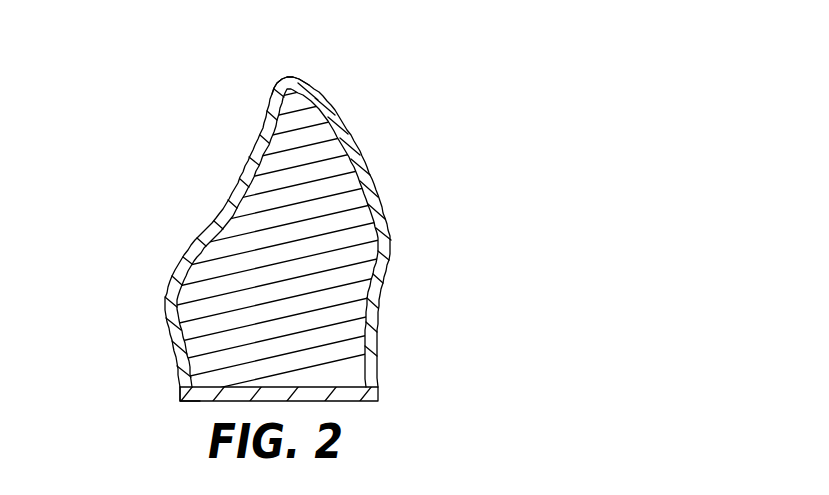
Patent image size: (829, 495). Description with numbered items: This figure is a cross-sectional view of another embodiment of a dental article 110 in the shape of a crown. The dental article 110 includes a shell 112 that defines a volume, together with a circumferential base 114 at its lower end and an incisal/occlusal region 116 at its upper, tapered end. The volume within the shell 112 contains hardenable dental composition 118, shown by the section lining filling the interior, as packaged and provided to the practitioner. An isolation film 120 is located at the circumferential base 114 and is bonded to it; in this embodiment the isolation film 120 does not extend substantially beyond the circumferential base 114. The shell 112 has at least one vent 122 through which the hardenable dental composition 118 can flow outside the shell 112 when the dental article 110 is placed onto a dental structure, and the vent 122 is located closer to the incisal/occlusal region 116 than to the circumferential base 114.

The dental article 110 is at (187, 101).
The shell 112 is at (392, 236).
The circumferential base 114 is at (378, 393).
The incisal/occlusal region 116 is at (288, 75).
The hardenable dental composition 118 is at (247, 215).
The isolation film 120 is at (183, 394).
The vent 122 is at (332, 113).